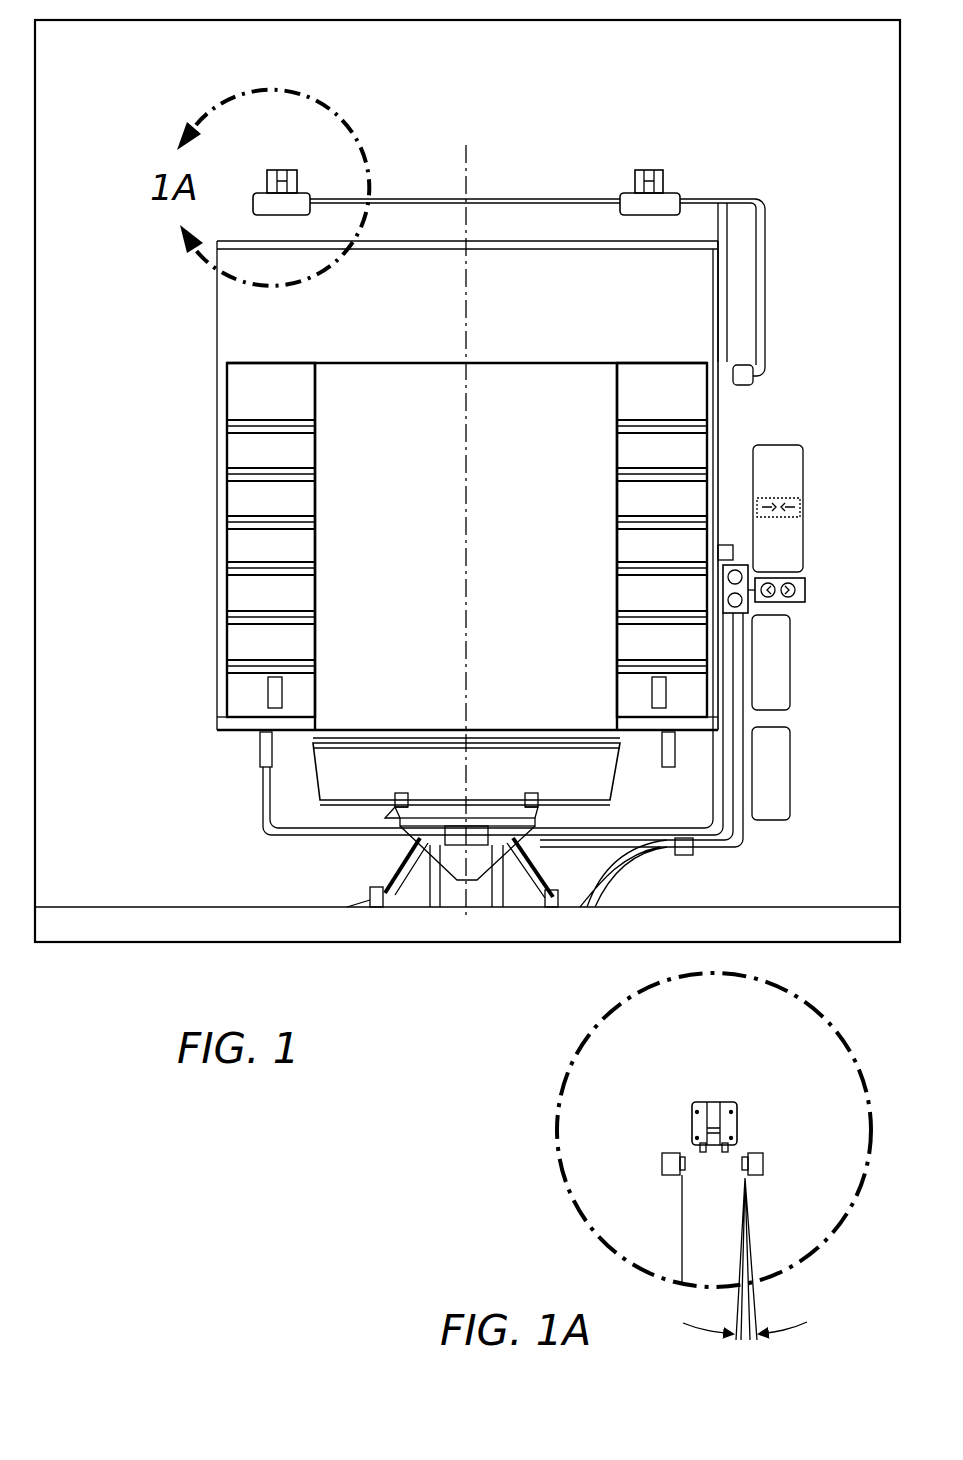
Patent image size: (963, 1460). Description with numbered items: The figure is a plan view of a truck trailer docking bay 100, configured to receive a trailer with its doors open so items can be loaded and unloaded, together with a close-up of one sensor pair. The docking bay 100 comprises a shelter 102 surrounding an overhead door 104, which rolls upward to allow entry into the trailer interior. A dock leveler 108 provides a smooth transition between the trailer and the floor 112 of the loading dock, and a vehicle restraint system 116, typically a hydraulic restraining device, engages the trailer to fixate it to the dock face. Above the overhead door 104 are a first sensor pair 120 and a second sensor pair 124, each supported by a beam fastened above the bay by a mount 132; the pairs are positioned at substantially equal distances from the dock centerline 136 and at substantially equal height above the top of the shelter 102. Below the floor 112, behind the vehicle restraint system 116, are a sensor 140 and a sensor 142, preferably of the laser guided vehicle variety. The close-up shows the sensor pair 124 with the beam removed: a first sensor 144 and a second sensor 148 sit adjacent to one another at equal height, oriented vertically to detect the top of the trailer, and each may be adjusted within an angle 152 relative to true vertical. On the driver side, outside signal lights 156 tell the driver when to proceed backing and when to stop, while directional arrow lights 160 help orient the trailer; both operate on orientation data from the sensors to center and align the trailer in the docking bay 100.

In FIG. 1, the docking bay 100 is at (157, 963).
In FIG. 1, the shelter 102 is at (217, 320).
In FIG. 1, the overhead door 104 is at (333, 406).
In FIG. 1, the dock leveler 108 is at (340, 773).
In FIG. 1, the floor 112 is at (353, 725).
In FIG. 1, the vehicle restraint system 116 is at (460, 862).
In FIG. 1, the first sensor pair 120 is at (661, 157).
In FIG. 1, the second sensor pair 124 is at (300, 145).
In FIG. 1A, the second sensor pair 124 is at (701, 1090).
In FIG. 1A, the mount 132 is at (720, 1100).
In FIG. 1, the dock centerline 136 is at (466, 148).
In FIG. 1, the sensor 140 is at (537, 813).
In FIG. 1, the sensor 142 is at (402, 807).
In FIG. 1A, the first sensor 144 is at (748, 1153).
In FIG. 1A, the second sensor 148 is at (681, 1153).
In FIG. 1A, the angle 152 is at (747, 1338).
In FIG. 1, the outside signal lights 156 is at (748, 566).
In FIG. 1, the directional arrow lights 160 is at (795, 604).